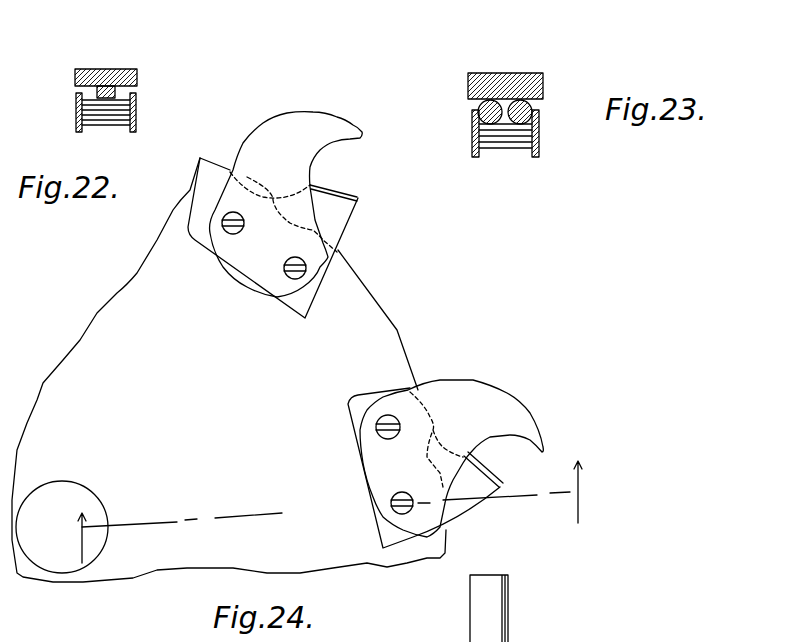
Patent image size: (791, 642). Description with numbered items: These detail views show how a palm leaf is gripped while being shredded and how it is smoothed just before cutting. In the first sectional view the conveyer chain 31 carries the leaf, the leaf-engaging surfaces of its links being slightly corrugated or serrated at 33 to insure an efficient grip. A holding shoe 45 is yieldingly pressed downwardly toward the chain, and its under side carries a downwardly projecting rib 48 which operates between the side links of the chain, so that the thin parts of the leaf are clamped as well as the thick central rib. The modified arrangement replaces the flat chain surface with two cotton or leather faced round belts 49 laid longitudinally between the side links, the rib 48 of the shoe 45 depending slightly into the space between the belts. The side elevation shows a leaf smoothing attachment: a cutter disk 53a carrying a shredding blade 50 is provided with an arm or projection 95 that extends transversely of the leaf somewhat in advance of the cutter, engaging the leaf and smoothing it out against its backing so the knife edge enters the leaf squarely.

In FIG. 22, the conveyer chain 31 is at (120, 142).
In FIG. 23, the conveyer chain 31 is at (479, 155).
In FIG. 22, the serrated surface 33 is at (70, 101).
In FIG. 23, the serrated surface 33 is at (539, 118).
In FIG. 22, the holding shoe 45 is at (130, 70).
In FIG. 22, the rib 48 is at (108, 92).
In FIG. 23, the rib 48 is at (505, 102).
In FIG. 23, the round belts 49 is at (487, 102).
In FIG. 24, the blade 50 is at (305, 122).
In FIG. 24, the cutter disk 53a is at (117, 293).
In FIG. 24, the arm or projection 95 is at (358, 197).